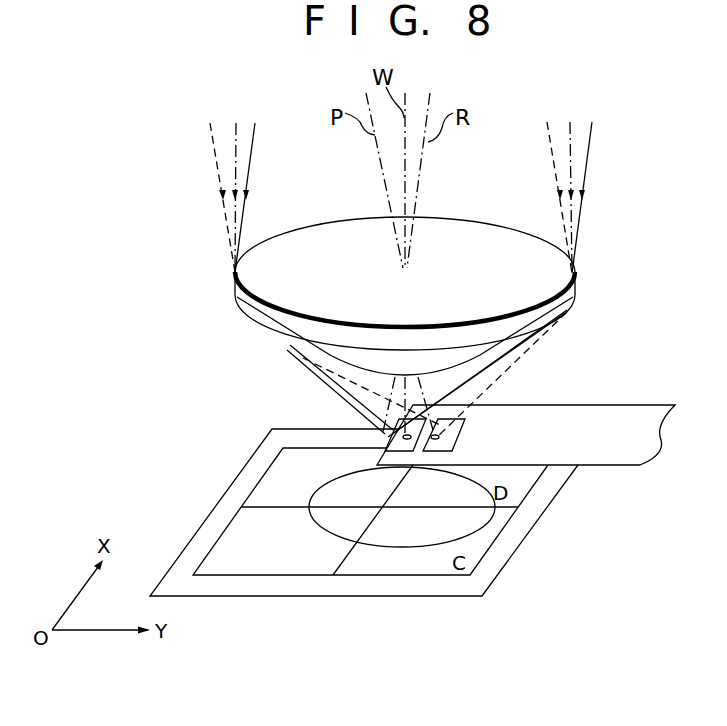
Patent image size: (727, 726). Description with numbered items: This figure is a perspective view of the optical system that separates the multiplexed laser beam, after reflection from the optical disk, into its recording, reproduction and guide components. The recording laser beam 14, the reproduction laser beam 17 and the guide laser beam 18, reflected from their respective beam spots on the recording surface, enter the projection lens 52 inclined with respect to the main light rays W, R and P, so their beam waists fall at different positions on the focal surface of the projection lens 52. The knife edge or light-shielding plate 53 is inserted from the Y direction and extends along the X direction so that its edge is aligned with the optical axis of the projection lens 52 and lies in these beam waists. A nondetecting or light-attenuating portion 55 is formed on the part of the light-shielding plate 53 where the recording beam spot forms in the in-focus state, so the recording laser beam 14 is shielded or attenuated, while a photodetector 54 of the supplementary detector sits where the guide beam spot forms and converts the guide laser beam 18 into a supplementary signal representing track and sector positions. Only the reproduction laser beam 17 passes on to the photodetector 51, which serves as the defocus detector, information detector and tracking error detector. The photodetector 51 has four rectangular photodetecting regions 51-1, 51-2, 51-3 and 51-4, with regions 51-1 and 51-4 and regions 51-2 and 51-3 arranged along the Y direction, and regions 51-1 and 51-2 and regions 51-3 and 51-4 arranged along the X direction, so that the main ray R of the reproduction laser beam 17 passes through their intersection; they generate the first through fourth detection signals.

The recording laser beam 14 is at (236, 128).
The reproduction laser beam 17 is at (250, 160).
The guide laser beam 18 is at (218, 170).
The photodetector 51 is at (522, 490).
The first photodetecting region 51-1 is at (267, 485).
The second photodetecting region 51-2 is at (223, 542).
The third photodetecting region 51-3 is at (437, 567).
The fourth photodetecting region 51-4 is at (510, 557).
The projection lens 52 is at (483, 230).
The knife edge or light-shielding plate 53 is at (625, 405).
The photodetector of the supplementary detector 54 is at (457, 435).
The nondetecting portion or light-attenuating portion 55 is at (390, 453).